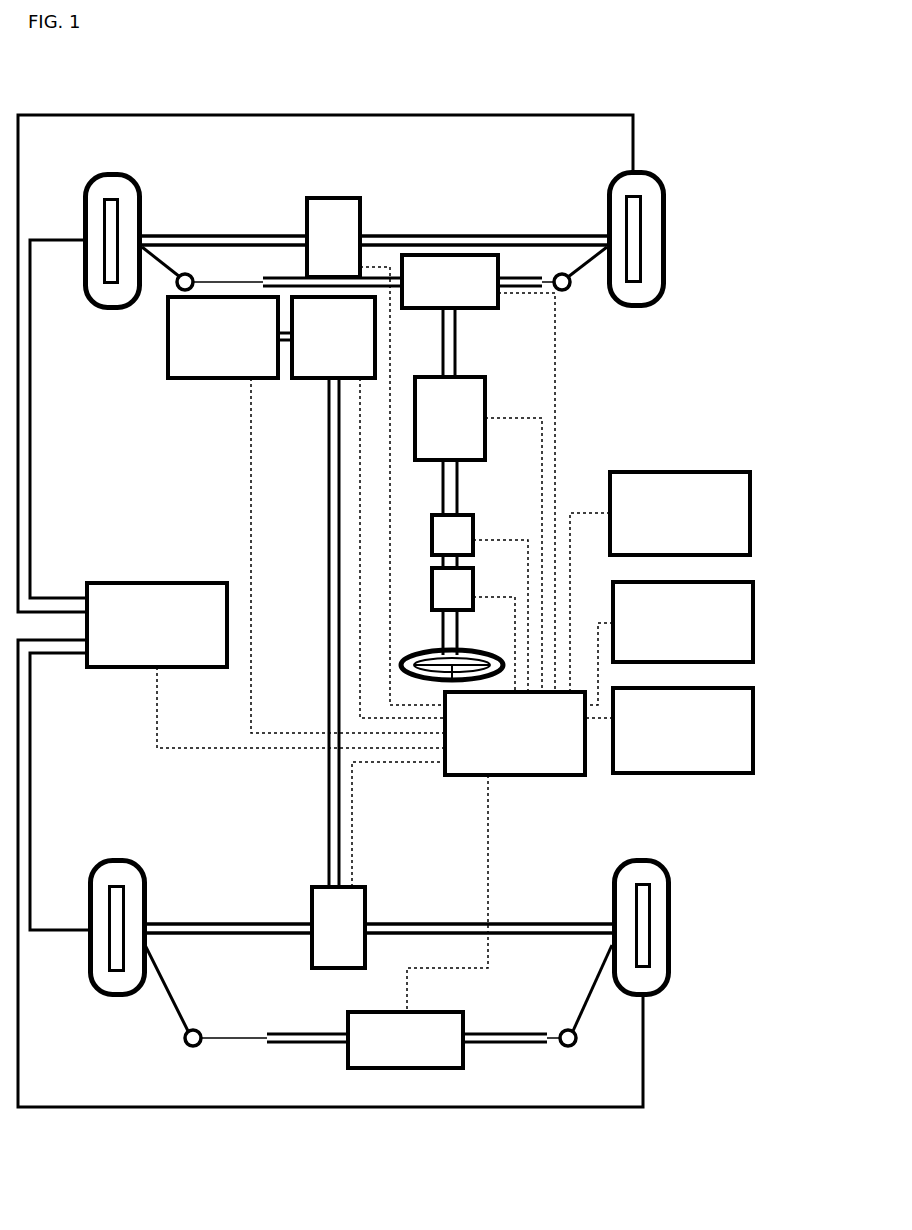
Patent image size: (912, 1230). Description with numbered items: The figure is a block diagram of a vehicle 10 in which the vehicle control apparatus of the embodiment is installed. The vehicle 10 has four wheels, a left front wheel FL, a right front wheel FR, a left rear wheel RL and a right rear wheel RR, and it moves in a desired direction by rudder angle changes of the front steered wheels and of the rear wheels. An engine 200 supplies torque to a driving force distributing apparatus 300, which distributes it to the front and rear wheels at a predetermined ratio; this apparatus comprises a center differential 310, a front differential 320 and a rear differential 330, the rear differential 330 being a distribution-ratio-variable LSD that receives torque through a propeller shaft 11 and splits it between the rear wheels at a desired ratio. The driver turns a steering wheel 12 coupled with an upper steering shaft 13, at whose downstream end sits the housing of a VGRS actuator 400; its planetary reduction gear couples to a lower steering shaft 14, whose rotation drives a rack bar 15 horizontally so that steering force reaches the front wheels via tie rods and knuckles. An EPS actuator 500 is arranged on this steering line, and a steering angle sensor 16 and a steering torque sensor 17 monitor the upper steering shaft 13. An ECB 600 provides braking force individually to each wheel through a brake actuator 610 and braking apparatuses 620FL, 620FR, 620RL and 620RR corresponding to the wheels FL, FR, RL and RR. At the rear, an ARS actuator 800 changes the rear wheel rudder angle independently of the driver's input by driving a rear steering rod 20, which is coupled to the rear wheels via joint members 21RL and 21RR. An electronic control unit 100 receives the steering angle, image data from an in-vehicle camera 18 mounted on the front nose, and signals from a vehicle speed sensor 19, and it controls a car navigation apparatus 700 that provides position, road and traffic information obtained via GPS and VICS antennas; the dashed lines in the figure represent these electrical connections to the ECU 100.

The vehicle 10 is at (630, 68).
The propeller shaft 11 is at (328, 600).
The steering wheel 12 is at (478, 652).
The upper steering shaft 13 is at (456, 495).
The lower steering shaft 14 is at (455, 360).
The rack bar 15 is at (265, 278).
The steering angle sensor 16 is at (452, 535).
The steering torque sensor 17 is at (452, 589).
The in-vehicle camera 18 is at (753, 582).
The vehicle speed sensor 19 is at (750, 472).
The rear steering rod 20 is at (300, 1033).
The joint member 21RL is at (167, 1005).
The joint member 21RR is at (596, 1008).
The electronic control unit 100 is at (445, 773).
The engine 200 is at (168, 378).
The driving force distributing apparatus 300 is at (377, 551).
The center differential apparatus 310 is at (326, 337).
The front differential apparatus 320 is at (333, 237).
The rear differential apparatus 330 is at (338, 927).
The VGRS actuator 400 is at (485, 405).
The EPS actuator 500 is at (498, 308).
The ECB 600 is at (157, 565).
The brake actuator 610 is at (142, 583).
The braking apparatus 620FL is at (112, 198).
The braking apparatus 620FR is at (642, 225).
The braking apparatus 620RL is at (122, 885).
The braking apparatus 620RR is at (662, 835).
The car navigation apparatus 700 is at (753, 688).
The ARS actuator 800 is at (455, 1012).
The left front wheel FL is at (83, 222).
The right front wheel FR is at (682, 218).
The left rear wheel RL is at (132, 908).
The right rear wheel RR is at (637, 908).